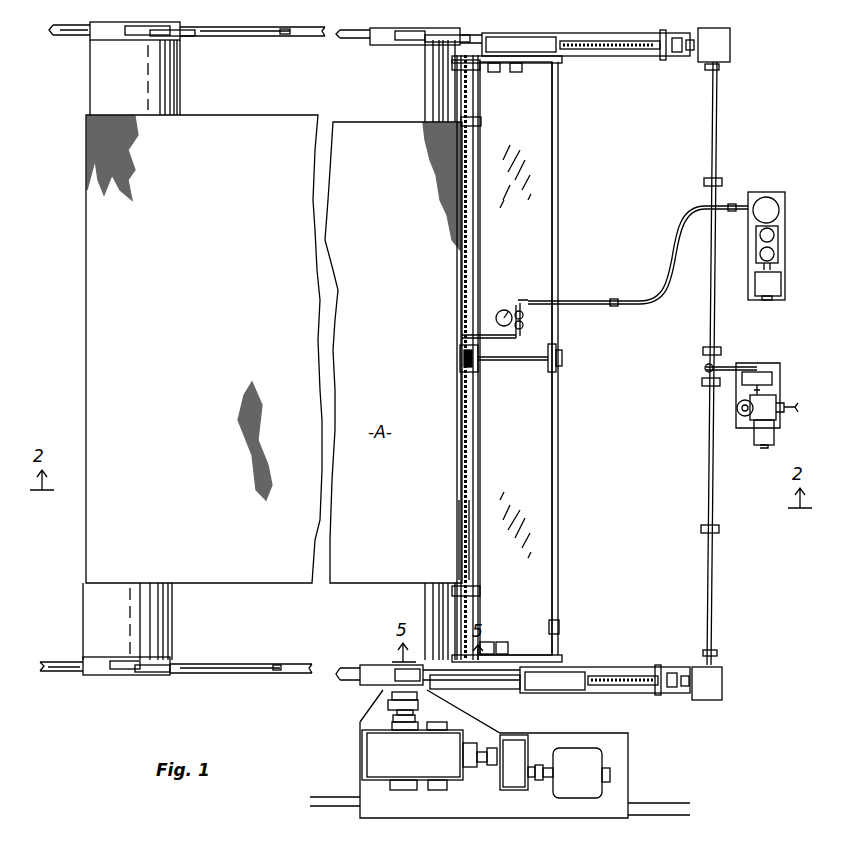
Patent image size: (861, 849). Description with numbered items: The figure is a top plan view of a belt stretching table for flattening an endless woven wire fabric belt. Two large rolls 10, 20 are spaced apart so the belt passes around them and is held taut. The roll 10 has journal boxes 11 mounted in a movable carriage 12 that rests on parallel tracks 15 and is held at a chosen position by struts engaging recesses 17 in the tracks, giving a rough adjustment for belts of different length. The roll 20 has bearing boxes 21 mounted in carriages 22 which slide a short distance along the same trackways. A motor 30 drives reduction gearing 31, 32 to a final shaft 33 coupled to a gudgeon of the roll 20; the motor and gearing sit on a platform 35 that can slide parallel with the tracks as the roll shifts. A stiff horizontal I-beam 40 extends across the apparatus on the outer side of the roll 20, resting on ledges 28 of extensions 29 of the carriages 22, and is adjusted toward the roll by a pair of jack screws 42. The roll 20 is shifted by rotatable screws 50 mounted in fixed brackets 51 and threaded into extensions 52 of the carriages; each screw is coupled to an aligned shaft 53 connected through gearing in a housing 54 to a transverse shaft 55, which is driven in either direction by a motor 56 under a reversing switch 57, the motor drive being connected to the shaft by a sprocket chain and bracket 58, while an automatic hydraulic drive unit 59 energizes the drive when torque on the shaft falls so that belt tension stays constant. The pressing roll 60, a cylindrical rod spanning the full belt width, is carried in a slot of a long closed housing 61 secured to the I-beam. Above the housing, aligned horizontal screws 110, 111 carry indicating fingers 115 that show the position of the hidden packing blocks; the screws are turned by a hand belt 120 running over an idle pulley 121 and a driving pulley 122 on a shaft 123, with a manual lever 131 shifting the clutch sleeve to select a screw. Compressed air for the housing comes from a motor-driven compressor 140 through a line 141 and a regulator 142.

The roll 10 is at (165, 615).
The journal boxes 11 is at (130, 673).
The movable carriage 12 is at (166, 28).
The tracks 15 is at (270, 42).
The recesses 17 is at (277, 674).
The roll 20 is at (368, 603).
The bearing boxes 21 is at (398, 678).
The carriages 22 is at (455, 30).
The ledges 28 is at (520, 70).
The extensions 29 is at (562, 64).
The motor 30 is at (569, 773).
The reduction gearing 31 is at (513, 778).
The reduction gearing 32 is at (429, 756).
The final shaft 33 is at (414, 720).
The platform 35 is at (500, 754).
The horizontal beam 40 is at (516, 358).
The jack screws 42 is at (495, 73).
The rotatable screws 50 is at (620, 55).
The fixed brackets 51 is at (555, 692).
The extensions 52 is at (582, 690).
The aligned shaft 53 is at (686, 55).
The housing 54 is at (731, 45).
The transverse shaft 55 is at (706, 432).
The motor 56 is at (776, 438).
The reversing switch 57 is at (790, 402).
The bracket 58 is at (730, 365).
The automatic hydraulic drive unit 59 is at (744, 418).
The pressing roll 60 is at (460, 541).
The housing 61 is at (465, 559).
The horizontal screw 110 is at (470, 476).
The horizontal screw 111 is at (470, 242).
The indicating fingers 115 is at (478, 124).
The hand belt 120 is at (559, 509).
The idle pulley 121 is at (557, 630).
The driving pulley 122 is at (560, 358).
The shaft 123 is at (510, 362).
The manual lever 131 is at (460, 358).
The motor-driven compressor 140 is at (778, 240).
The line 141 is at (667, 270).
The regulator 142 is at (530, 302).